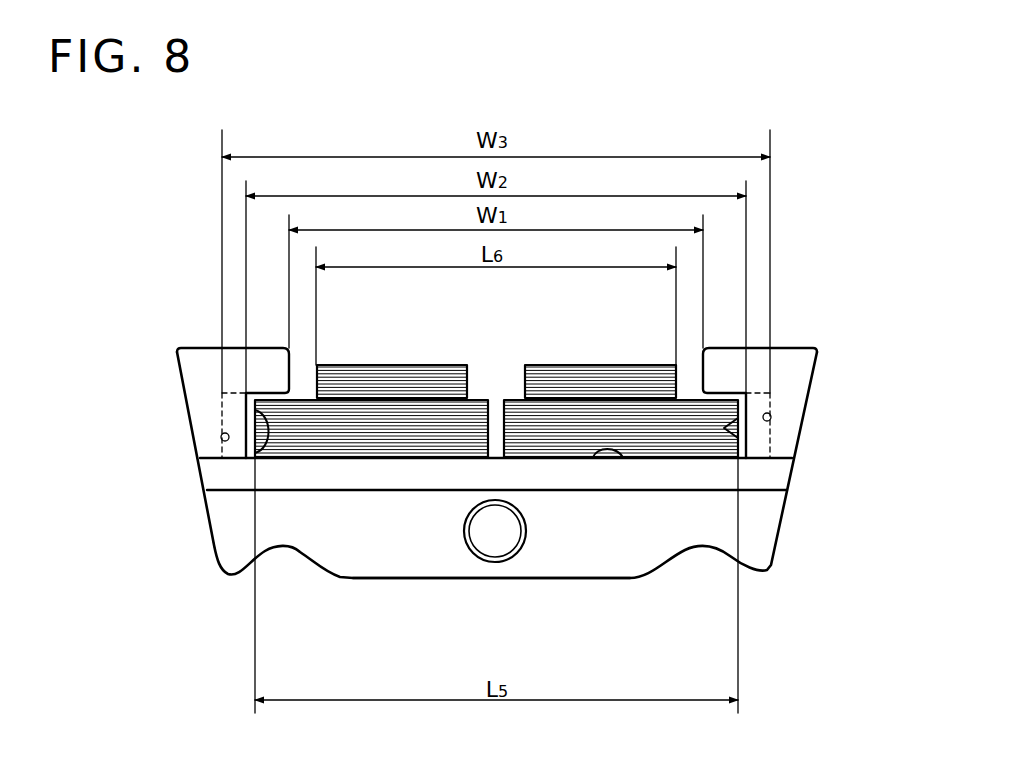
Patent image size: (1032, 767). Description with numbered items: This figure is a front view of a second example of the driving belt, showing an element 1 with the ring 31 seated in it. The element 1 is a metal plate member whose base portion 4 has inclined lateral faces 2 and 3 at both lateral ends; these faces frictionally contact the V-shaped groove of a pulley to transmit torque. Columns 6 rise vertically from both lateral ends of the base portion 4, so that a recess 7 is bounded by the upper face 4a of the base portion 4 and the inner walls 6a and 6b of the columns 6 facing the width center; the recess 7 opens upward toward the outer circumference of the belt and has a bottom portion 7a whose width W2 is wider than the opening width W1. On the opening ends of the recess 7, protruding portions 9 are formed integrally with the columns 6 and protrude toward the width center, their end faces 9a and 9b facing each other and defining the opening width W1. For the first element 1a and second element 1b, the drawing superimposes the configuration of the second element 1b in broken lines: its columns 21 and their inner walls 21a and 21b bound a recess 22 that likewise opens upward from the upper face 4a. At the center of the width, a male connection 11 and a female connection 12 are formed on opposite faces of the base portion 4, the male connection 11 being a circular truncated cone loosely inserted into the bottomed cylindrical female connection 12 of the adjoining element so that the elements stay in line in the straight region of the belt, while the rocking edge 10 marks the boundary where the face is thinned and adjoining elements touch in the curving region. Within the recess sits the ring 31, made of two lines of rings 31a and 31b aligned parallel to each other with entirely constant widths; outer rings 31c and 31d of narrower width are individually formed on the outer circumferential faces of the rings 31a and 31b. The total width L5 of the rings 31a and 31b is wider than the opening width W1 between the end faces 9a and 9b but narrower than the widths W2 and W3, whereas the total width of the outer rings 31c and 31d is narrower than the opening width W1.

The element 1 is at (493, 512).
The first element 1a is at (493, 512).
The second element 1b is at (493, 512).
The lateral face 2 is at (783, 518).
The lateral face 3 is at (493, 494).
The base portion 4 is at (650, 558).
The upper face 4a is at (594, 539).
The bottom portion 7a is at (607, 458).
The column 6 is at (493, 353).
The column 21 is at (493, 353).
The inner wall 6a is at (343, 427).
The inner wall 6b is at (725, 428).
The recess 7 is at (496, 337).
The recess 22 is at (496, 337).
The protruding portion 9 is at (493, 353).
The end face 9a is at (289, 358).
The end face 9b is at (703, 368).
The rocking edge 10 is at (423, 490).
The male connection 11 is at (498, 577).
The female connection 12 is at (492, 537).
The inner wall 21a is at (221, 437).
The inner wall 21b is at (771, 417).
The ring 31 is at (496, 337).
The ring 31a is at (213, 560).
The ring 31b is at (670, 440).
The outer ring 31c is at (368, 375).
The outer ring 31d is at (615, 375).